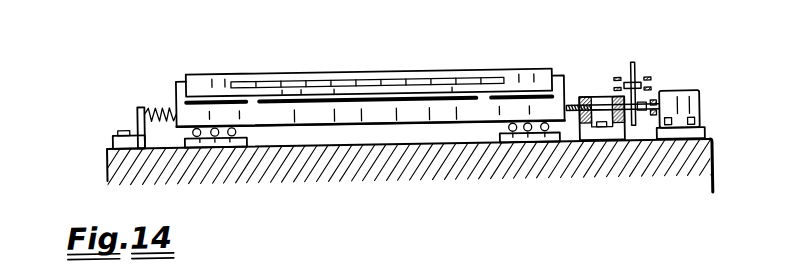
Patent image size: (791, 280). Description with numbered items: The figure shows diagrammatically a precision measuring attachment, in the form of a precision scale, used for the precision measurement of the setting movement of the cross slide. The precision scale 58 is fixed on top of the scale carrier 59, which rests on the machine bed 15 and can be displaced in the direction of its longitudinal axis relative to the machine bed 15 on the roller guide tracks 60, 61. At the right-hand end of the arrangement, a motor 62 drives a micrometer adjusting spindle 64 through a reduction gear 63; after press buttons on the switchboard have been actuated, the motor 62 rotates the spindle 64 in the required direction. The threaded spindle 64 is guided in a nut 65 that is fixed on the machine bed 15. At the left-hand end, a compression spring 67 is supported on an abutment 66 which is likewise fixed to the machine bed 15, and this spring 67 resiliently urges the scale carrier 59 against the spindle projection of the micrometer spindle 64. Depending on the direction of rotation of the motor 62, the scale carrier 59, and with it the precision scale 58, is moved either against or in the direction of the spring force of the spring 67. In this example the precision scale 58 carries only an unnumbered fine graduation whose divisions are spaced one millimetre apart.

The machine bed 15 is at (155, 156).
The precision scale 58 is at (213, 84).
The scale carrier 59 is at (387, 115).
The roller guide track 60 is at (217, 146).
The roller guide track 61 is at (525, 144).
The motor 62 is at (677, 110).
The reduction gear 63 is at (632, 91).
The micrometer adjusting spindle 64 is at (607, 113).
The nut 65 is at (585, 148).
The abutment 66 is at (140, 118).
The compression spring 67 is at (168, 108).